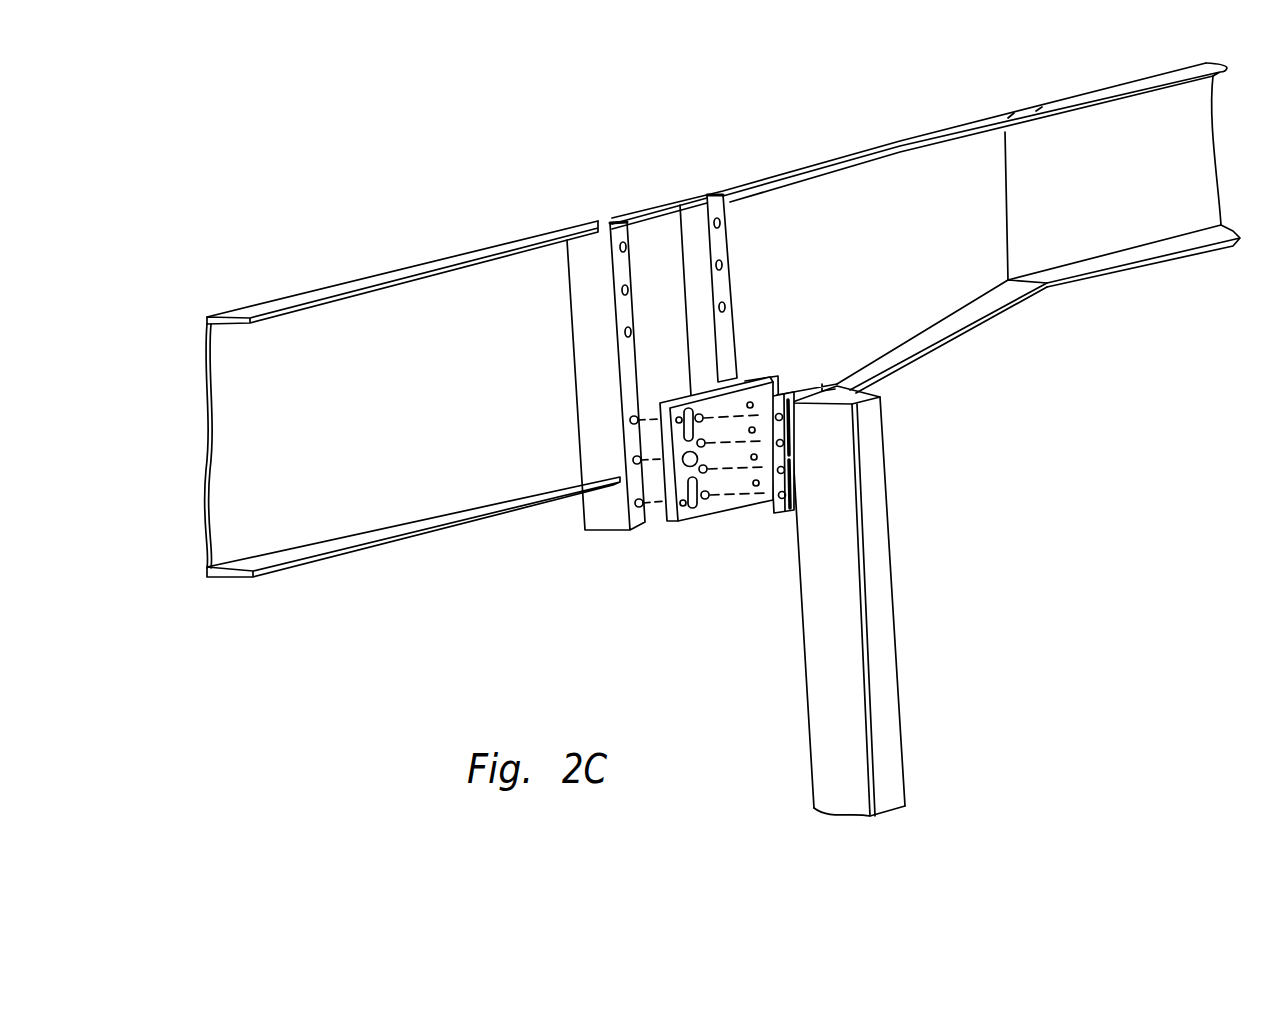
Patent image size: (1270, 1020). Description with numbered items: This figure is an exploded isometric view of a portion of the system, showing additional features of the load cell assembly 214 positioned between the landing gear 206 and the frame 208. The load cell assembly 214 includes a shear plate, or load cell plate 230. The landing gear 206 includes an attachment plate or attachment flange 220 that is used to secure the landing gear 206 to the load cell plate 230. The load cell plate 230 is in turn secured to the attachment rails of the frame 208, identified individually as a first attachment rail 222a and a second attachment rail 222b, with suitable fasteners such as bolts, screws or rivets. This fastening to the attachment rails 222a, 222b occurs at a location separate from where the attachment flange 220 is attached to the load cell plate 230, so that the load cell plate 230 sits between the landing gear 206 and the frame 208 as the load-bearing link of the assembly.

The first attachment rail 222a is at (582, 300).
The second attachment rail 222b is at (692, 258).
The load cell plate 230 is at (745, 397).
The load cell assembly 214 is at (703, 519).
The attachment flange 220 is at (773, 516).
The landing gear 206 is at (880, 640).
The frame 208 is at (1035, 232).